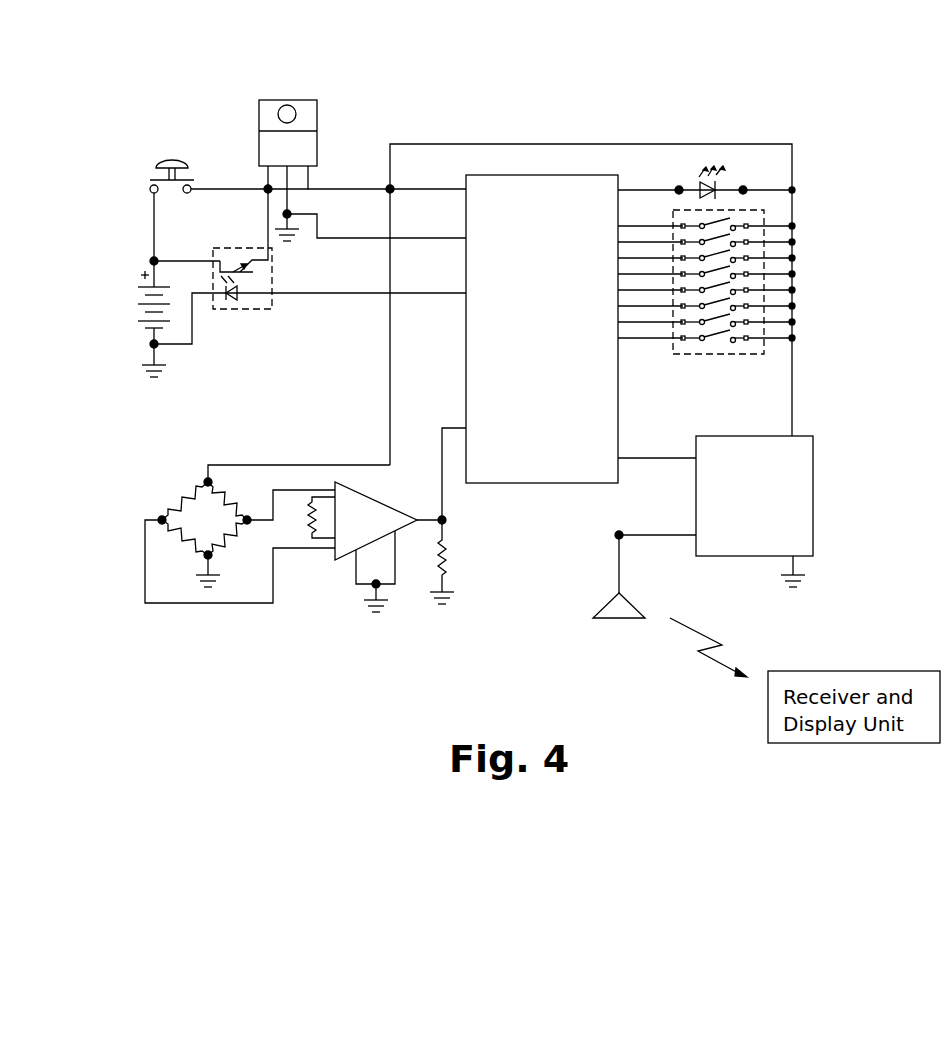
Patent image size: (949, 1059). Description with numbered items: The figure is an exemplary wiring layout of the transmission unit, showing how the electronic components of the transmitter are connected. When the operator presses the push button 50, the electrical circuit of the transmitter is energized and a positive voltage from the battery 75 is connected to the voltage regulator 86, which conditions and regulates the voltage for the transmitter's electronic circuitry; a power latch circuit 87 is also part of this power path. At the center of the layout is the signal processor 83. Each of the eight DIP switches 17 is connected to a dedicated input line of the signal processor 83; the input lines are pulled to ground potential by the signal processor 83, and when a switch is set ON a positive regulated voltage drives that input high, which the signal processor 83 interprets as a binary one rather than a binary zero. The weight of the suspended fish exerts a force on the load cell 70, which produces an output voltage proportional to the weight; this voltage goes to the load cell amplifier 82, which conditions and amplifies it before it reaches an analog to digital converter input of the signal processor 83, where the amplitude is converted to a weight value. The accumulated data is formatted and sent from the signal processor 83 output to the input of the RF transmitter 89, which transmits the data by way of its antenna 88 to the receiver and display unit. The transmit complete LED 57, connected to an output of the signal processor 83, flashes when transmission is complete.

The DIP switches 17 is at (780, 270).
The push button 50 is at (139, 174).
The transmit complete LED 57 is at (753, 133).
The load cell 70 is at (176, 506).
The battery 75 is at (112, 317).
The load cell amplifier 82 is at (347, 582).
The signal processor 83 is at (589, 270).
The voltage regulator 86 is at (241, 106).
The power latch circuit 87 is at (172, 241).
The antenna 88 is at (580, 574).
The RF transmitter 89 is at (801, 515).